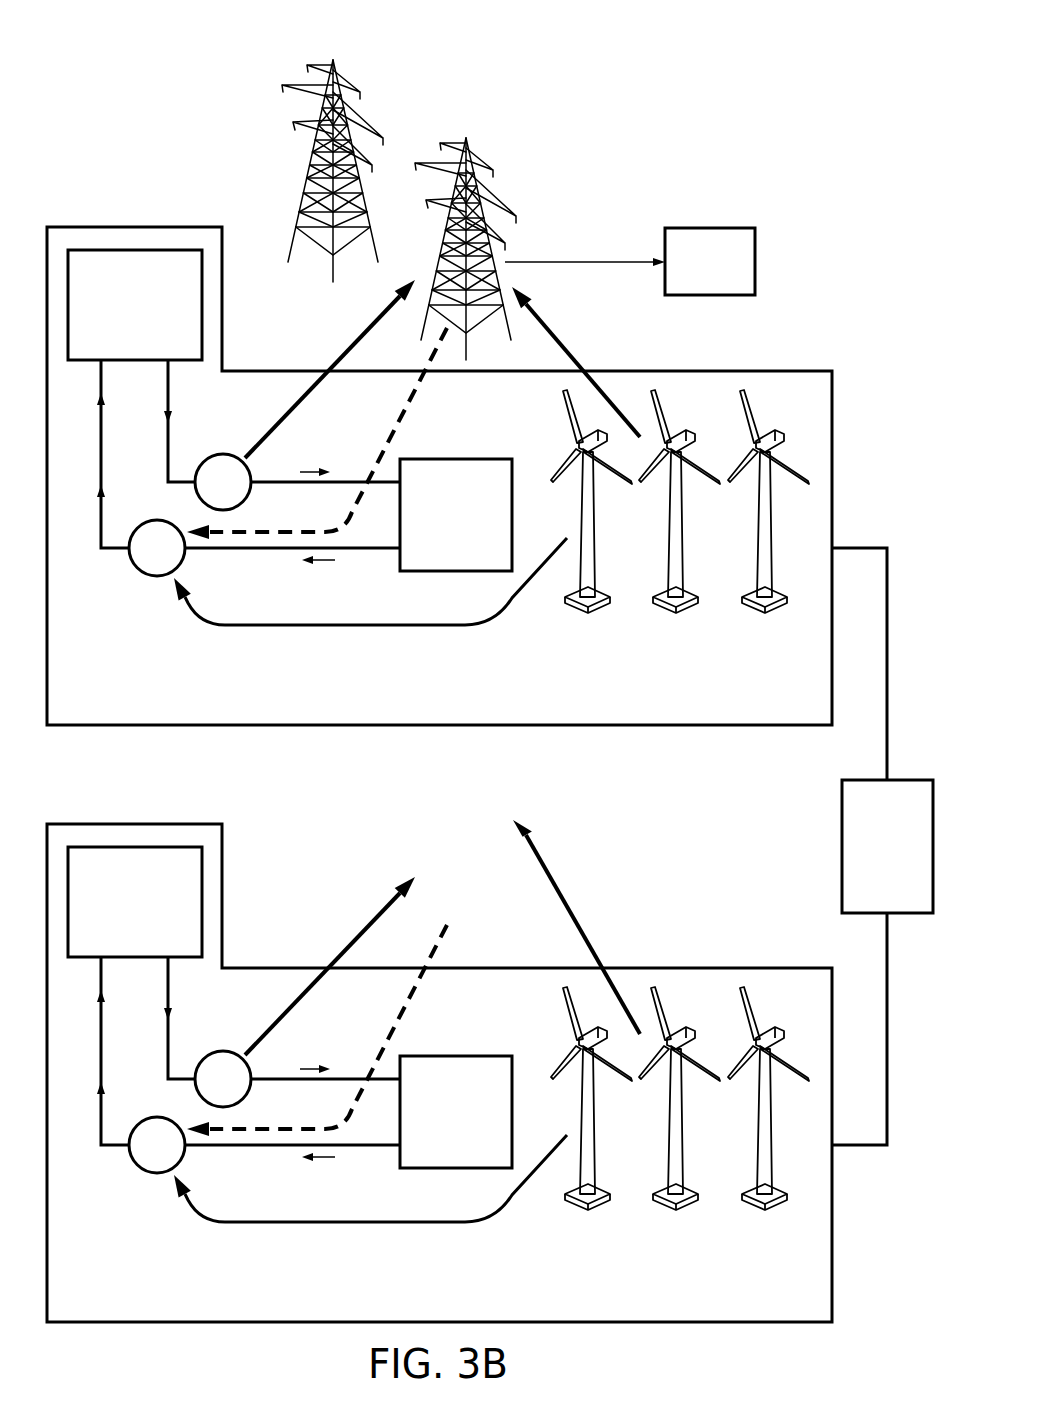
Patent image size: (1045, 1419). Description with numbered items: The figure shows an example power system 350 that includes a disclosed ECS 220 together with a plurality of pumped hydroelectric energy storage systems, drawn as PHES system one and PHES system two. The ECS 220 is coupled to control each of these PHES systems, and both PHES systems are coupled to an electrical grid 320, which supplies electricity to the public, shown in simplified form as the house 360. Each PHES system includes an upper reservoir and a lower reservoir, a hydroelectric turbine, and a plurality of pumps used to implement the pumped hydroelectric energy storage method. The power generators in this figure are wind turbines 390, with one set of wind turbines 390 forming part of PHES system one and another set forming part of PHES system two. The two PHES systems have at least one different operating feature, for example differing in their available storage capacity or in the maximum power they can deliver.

The power system 350 is at (718, 88).
The electrical grid 320 is at (258, 142).
The house 360 is at (731, 274).
The wind turbine 390 is at (706, 627).
The ECS 220 is at (908, 878).